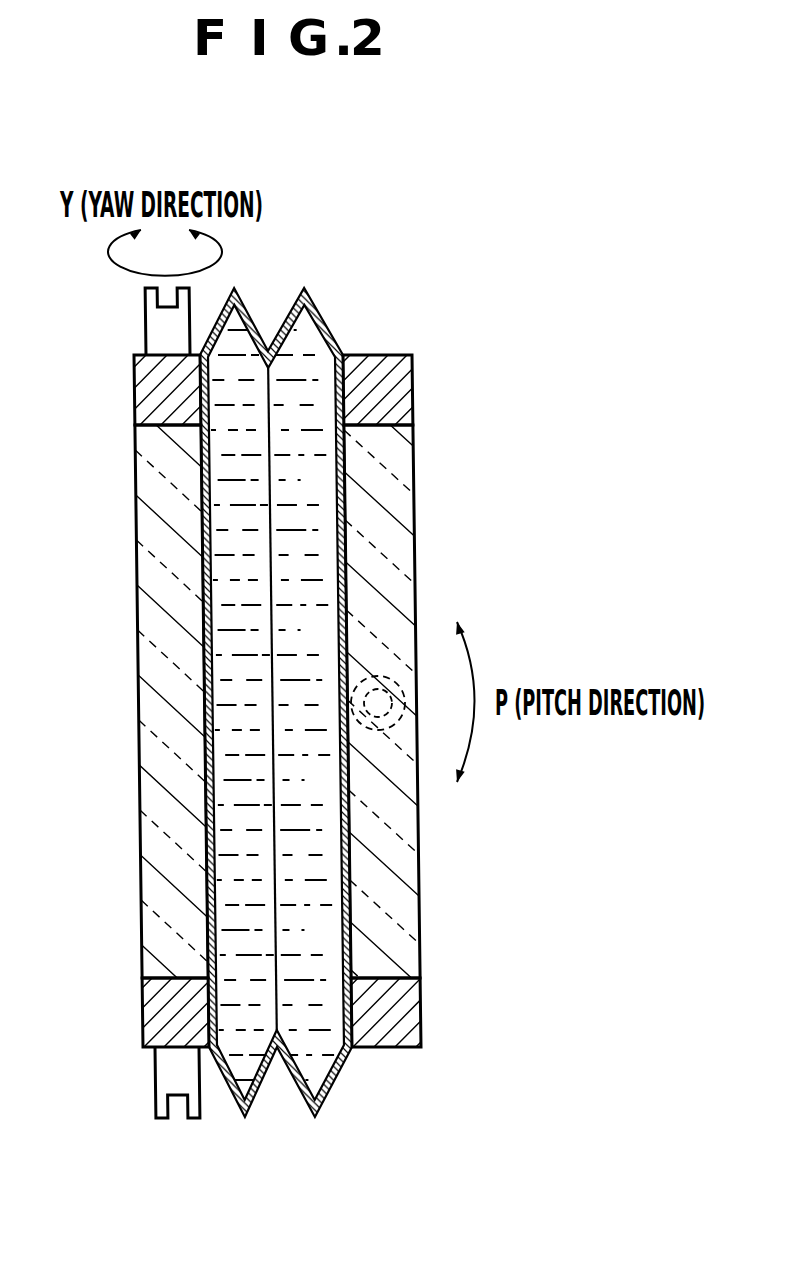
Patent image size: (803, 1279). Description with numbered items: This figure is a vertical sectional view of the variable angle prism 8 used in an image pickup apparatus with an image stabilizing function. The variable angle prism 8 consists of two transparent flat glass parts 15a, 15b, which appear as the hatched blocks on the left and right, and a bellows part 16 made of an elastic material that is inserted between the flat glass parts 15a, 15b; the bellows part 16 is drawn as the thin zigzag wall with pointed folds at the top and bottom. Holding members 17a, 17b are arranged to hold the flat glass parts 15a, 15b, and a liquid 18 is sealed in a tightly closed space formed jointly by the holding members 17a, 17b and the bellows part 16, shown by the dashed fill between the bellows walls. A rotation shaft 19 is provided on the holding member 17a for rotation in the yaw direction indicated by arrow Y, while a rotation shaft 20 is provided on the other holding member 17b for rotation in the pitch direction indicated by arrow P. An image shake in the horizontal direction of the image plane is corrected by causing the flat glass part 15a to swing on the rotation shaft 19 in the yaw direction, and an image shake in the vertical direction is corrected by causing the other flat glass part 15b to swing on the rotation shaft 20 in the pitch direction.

The variable angle prism 8 is at (364, 334).
The transparent flat glass part 15a is at (150, 527).
The transparent flat glass part 15b is at (380, 483).
The bellows part 16 is at (323, 325).
The holding member 17a is at (160, 402).
The holding member 17b is at (388, 393).
The liquid 18 is at (297, 387).
The rotation shaft 19 is at (163, 337).
The rotation shaft 20 is at (380, 676).